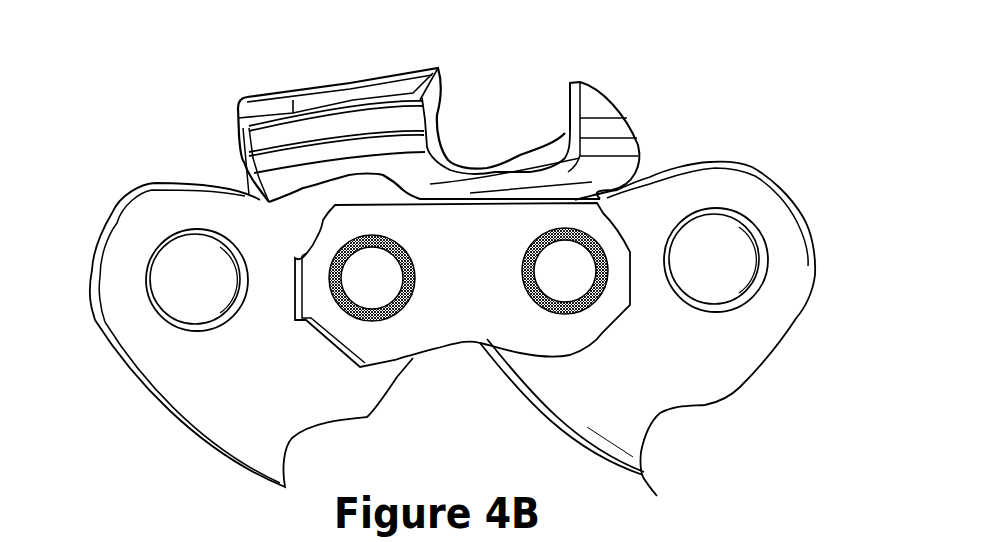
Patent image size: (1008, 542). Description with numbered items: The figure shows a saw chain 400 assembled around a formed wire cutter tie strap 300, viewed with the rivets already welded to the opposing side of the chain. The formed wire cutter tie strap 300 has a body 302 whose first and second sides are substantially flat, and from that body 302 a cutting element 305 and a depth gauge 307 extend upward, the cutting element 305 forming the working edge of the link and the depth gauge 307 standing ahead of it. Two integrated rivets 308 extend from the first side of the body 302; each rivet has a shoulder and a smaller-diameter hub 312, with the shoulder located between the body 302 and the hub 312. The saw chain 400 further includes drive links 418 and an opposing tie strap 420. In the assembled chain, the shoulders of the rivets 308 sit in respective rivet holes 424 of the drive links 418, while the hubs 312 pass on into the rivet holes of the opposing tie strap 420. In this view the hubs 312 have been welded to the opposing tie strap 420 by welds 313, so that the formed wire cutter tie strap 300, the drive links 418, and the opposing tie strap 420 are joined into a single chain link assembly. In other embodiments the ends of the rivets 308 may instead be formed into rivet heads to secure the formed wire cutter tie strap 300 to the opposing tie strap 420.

The formed wire cutter tie strap 300 is at (496, 90).
The body 302 is at (235, 181).
The cutting element 305 is at (325, 82).
The depth gauge 307 is at (587, 93).
The integrated rivets 308 is at (542, 278).
The hub 312 is at (558, 257).
The welds 313 is at (583, 313).
The saw chain 400 is at (158, 95).
The drive links 418 is at (778, 220).
The opposing tie strap 420 is at (641, 474).
The rivet holes 424 is at (683, 245).